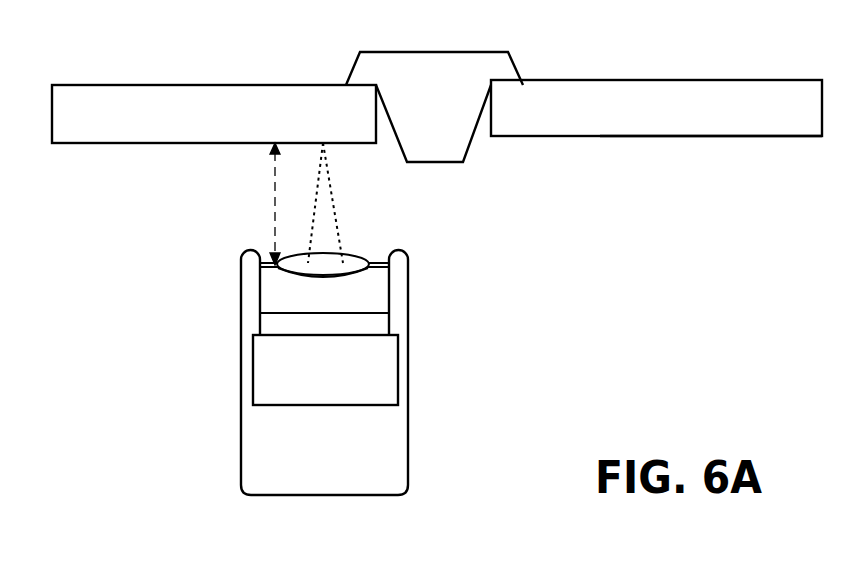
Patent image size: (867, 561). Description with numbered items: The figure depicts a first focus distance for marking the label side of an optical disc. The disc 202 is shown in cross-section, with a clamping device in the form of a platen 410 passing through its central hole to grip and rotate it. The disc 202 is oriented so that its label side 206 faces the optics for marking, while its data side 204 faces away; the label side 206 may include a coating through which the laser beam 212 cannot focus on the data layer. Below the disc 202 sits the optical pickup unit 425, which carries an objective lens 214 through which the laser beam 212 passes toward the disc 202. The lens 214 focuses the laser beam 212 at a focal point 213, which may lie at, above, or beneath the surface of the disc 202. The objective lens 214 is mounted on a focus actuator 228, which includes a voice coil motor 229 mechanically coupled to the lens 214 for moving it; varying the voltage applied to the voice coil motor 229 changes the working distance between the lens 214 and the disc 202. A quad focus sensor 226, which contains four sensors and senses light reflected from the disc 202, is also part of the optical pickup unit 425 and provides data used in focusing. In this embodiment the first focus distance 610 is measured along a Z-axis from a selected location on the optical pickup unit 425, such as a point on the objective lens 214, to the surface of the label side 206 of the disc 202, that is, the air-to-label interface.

The disc 202 is at (307, 85).
The data side 204 is at (736, 80).
The label side 206 is at (685, 136).
The platen 410 is at (465, 52).
The focal point 213 is at (323, 143).
The laser beam 212 is at (335, 212).
The objective lens 214 is at (355, 262).
The quad focus sensor 226 is at (370, 311).
The first focus distance 610 is at (275, 246).
The optical pickup unit 425 is at (379, 372).
The voice coil motor 229 is at (325, 370).
The focus actuator 228 is at (324, 446).